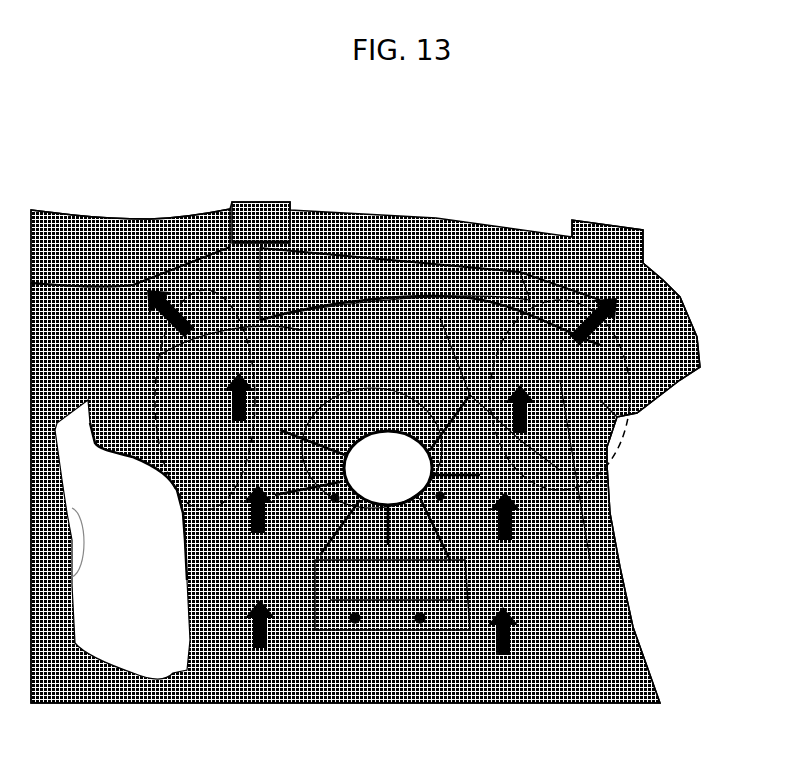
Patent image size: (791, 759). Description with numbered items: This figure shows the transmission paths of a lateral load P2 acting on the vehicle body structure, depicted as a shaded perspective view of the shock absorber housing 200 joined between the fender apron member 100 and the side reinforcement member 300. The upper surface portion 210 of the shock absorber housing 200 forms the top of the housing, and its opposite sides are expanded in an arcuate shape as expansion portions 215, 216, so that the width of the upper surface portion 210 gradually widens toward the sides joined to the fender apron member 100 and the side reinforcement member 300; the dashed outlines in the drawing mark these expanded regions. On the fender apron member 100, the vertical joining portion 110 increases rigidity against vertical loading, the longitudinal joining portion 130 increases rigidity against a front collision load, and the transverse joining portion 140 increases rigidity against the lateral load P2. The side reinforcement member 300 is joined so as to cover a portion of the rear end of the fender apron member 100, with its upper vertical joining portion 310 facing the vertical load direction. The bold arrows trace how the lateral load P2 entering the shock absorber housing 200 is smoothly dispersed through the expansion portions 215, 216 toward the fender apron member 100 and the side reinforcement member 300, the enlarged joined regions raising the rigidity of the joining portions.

The fender apron member 100 is at (436, 219).
The vertical joining portion 110 is at (333, 290).
The longitudinal joining portion 130 is at (677, 390).
The transverse joining portion 140 is at (620, 417).
The shock absorber housing 200 is at (616, 515).
The upper surface portion 210 is at (452, 385).
The expansion portion 215 is at (178, 437).
The expansion portion 216 is at (607, 463).
The side reinforcement member 300 is at (73, 214).
The upper vertical joining portion 310 is at (266, 222).
The lateral load P2 is at (253, 627).